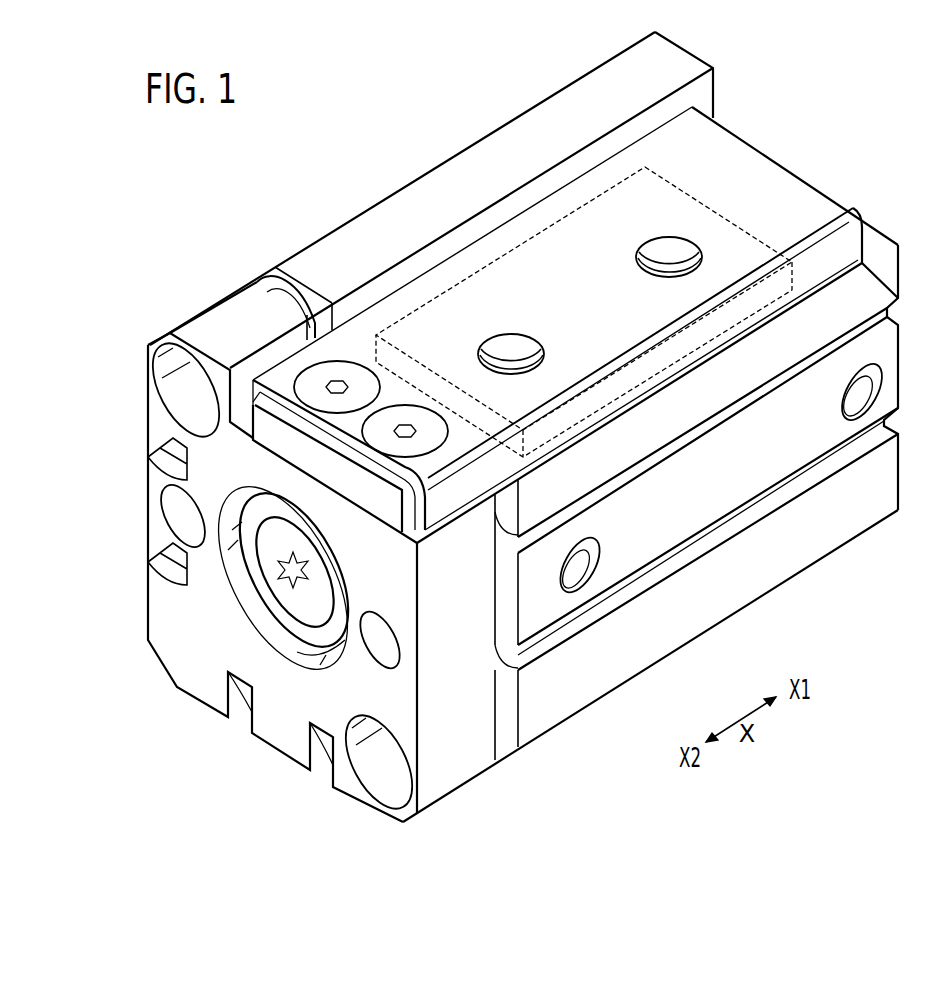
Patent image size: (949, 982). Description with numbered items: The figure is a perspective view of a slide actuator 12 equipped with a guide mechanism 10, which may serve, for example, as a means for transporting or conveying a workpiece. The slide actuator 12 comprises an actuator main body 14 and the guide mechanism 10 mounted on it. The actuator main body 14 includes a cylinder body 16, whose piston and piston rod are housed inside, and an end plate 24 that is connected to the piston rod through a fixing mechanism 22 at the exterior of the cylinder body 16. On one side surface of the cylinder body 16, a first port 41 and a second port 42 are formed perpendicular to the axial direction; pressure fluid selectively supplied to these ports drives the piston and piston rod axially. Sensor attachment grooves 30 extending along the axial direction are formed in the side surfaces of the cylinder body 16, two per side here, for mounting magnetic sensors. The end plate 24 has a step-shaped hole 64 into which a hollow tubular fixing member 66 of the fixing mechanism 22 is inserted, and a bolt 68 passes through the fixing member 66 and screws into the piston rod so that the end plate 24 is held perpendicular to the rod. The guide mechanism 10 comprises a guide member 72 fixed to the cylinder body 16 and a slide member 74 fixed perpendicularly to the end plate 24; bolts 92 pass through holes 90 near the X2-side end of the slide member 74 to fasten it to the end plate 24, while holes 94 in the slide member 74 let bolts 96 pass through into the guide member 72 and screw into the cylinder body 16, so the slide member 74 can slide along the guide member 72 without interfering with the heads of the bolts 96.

The guide mechanism 10 is at (803, 150).
The slide actuator 12 is at (321, 141).
The actuator main body 14 is at (521, 98).
The cylinder body 16 is at (835, 538).
The fixing mechanism 22 is at (92, 593).
The end plate 24 is at (194, 327).
The sensor attachment grooves 30 is at (163, 550).
The first port 41 is at (868, 388).
The second port 42 is at (574, 577).
The hole 64 is at (300, 655).
The fixing member 66 is at (258, 583).
The bolt 68 is at (280, 596).
The guide member 72 is at (527, 240).
The slide member 74 is at (727, 150).
The holes 90 is at (407, 400).
The bolts 92 is at (378, 438).
The holes 94 is at (652, 248).
The bolts 96 is at (675, 268).